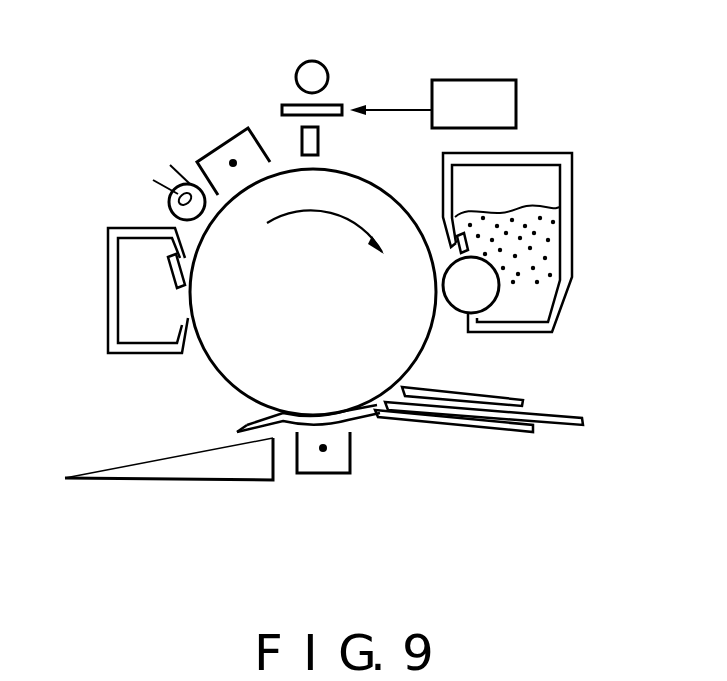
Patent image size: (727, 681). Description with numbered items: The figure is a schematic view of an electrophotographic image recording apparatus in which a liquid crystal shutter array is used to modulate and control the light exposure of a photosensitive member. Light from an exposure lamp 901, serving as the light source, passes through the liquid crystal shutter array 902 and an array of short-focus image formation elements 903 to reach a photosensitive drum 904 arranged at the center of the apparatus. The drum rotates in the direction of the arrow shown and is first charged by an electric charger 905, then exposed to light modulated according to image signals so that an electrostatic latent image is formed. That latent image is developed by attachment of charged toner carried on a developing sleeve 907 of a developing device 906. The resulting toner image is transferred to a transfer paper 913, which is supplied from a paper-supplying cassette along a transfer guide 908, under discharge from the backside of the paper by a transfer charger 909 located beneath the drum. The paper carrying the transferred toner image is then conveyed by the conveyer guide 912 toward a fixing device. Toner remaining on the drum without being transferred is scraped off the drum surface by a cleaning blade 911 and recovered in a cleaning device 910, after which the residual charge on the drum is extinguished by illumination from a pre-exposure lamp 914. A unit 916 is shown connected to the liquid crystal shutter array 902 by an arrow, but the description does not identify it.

The exposure lamp 901 is at (324, 70).
The liquid crystal shutter array 902 is at (282, 107).
The array of short-focus image formation elements 903 is at (320, 133).
The photosensitive drum 904 is at (333, 176).
The electric charger 905 is at (222, 148).
The developing device 906 is at (535, 255).
The developing sleeve 907 is at (460, 295).
The transfer guide 908 is at (498, 428).
The transfer charger 909 is at (352, 447).
The cleaning device 910 is at (108, 330).
The cleaning blade 911 is at (173, 270).
The conveyer guide 912 is at (195, 470).
The transfer paper 913 is at (568, 427).
The pre-exposure lamp 914 is at (153, 181).
The control unit 916 is at (477, 80).